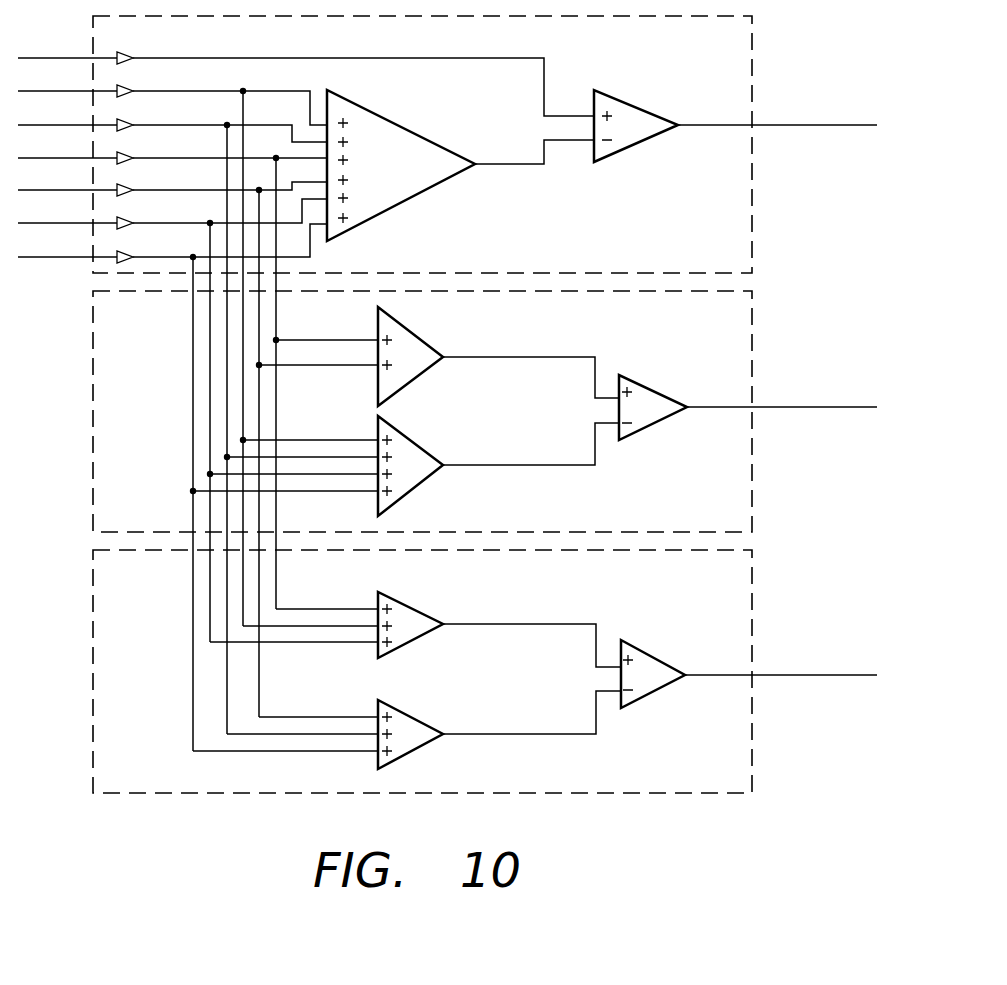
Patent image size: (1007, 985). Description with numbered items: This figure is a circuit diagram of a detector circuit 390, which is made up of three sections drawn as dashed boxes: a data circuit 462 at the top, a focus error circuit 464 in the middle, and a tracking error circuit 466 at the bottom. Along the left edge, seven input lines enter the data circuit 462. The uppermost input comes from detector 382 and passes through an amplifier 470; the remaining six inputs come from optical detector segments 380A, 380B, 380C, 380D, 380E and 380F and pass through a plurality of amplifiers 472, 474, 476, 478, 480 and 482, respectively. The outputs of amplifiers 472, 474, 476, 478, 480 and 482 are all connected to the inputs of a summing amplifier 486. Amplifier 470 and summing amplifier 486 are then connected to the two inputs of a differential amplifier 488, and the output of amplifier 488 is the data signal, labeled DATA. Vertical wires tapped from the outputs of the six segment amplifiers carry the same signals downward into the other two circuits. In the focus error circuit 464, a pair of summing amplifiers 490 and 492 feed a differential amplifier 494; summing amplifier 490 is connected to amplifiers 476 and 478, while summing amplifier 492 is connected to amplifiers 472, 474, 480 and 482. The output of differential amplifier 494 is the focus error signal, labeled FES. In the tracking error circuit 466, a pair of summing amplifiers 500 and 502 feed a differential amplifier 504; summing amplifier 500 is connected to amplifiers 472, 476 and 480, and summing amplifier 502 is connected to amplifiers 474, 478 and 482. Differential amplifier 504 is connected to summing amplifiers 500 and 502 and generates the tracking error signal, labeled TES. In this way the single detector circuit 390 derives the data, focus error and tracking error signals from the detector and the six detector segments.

The detector 382 is at (67, 44).
The optical detector segment 380A is at (67, 77).
The optical detector segment 380B is at (67, 111).
The optical detector segment 380C is at (67, 144).
The optical detector segment 380D is at (67, 176).
The optical detector segment 380E is at (67, 209).
The optical detector segment 380F is at (67, 243).
The amplifier 470 is at (126, 54).
The amplifier 472 is at (126, 87).
The amplifier 474 is at (126, 121).
The amplifier 476 is at (126, 154).
The amplifier 478 is at (126, 186).
The amplifier 480 is at (126, 219).
The amplifier 482 is at (126, 253).
The summing amplifier 486 is at (400, 122).
The differential amplifier 488 is at (630, 102).
The summing amplifier 490 is at (418, 335).
The summing amplifier 492 is at (420, 449).
The differential amplifier 494 is at (652, 392).
The summing amplifier 500 is at (410, 607).
The summing amplifier 502 is at (405, 716).
The differential amplifier 504 is at (649, 657).
The data circuit 462 is at (752, 58).
The focus error circuit 464 is at (752, 322).
The tracking error circuit 466 is at (752, 560).
The detector circuit 390 is at (200, 820).